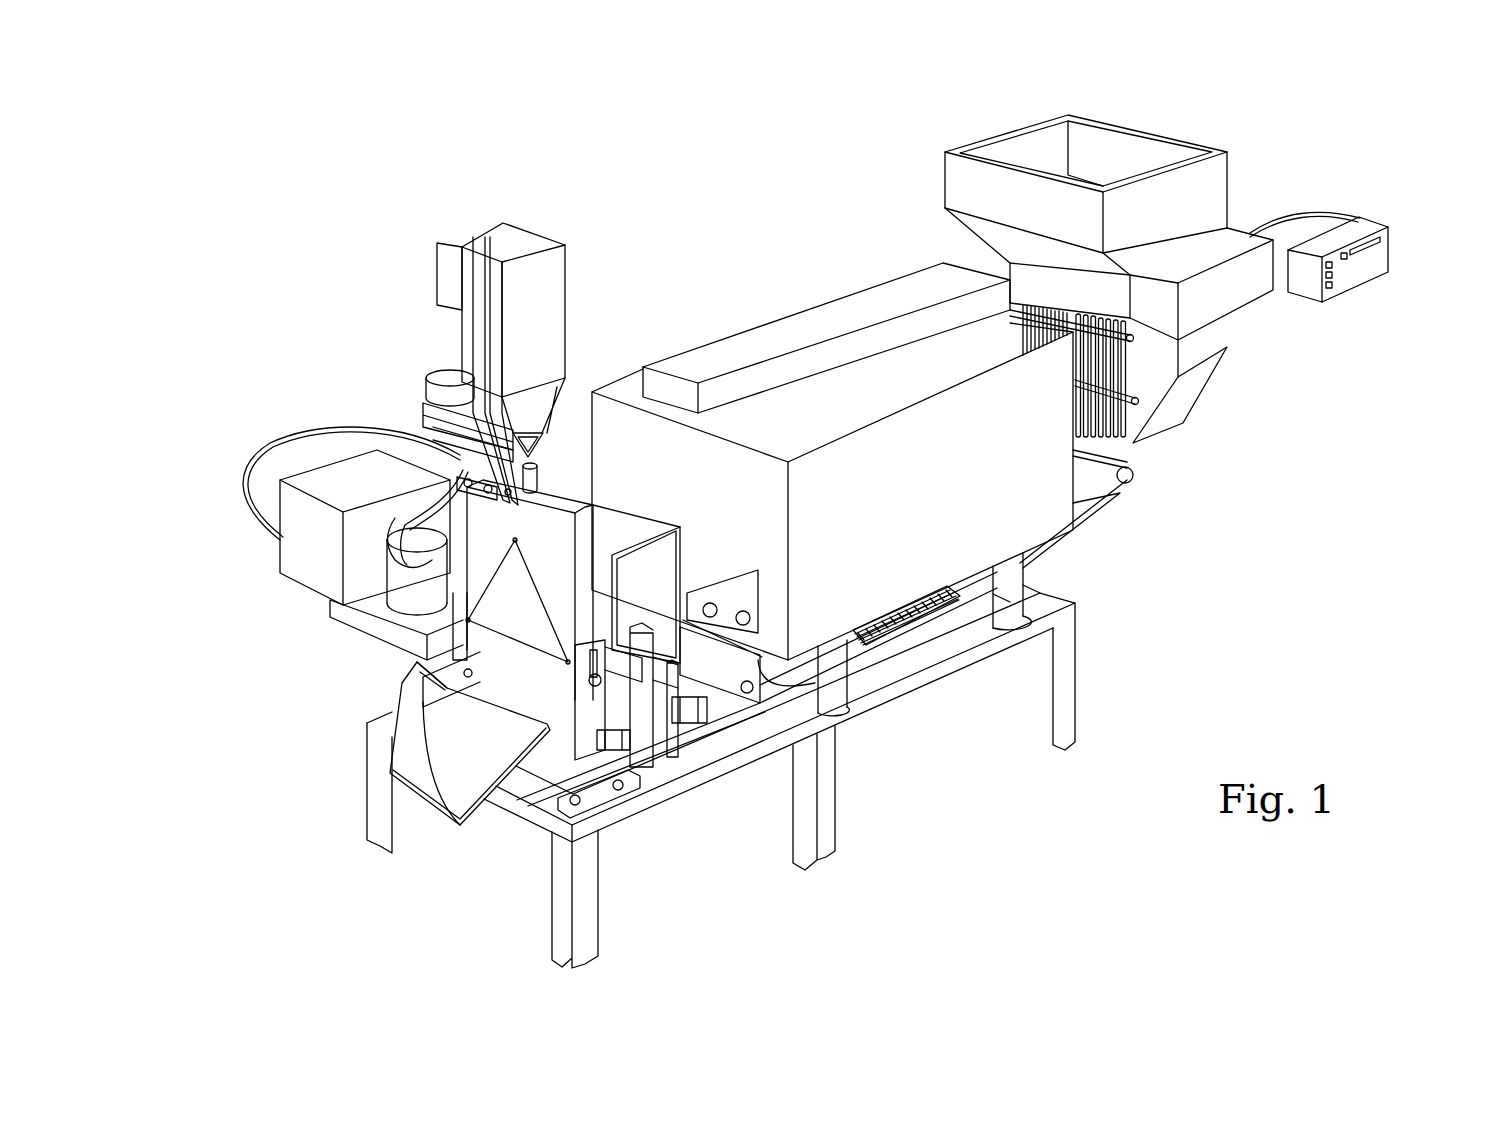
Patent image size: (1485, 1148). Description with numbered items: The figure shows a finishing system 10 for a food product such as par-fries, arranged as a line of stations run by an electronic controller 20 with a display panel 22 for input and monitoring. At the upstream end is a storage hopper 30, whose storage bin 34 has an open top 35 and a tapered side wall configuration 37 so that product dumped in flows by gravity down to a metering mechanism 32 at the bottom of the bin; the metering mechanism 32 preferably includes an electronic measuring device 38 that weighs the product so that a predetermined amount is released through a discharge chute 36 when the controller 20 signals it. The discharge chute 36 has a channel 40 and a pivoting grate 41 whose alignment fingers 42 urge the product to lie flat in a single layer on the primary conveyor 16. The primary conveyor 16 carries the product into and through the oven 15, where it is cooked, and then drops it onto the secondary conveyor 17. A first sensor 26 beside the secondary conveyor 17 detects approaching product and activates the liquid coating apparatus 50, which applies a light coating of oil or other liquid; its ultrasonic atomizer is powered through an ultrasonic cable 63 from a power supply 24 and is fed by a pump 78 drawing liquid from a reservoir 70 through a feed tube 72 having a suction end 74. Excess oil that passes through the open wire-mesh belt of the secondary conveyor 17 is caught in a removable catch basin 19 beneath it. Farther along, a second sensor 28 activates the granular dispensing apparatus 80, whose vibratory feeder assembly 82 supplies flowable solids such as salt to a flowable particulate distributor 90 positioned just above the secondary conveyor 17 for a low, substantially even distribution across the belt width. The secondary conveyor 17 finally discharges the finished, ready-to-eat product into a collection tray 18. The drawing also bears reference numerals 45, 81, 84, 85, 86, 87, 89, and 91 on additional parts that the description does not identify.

The finishing system 10 is at (783, 302).
The oven 15 is at (830, 292).
The primary conveyor 16 is at (1103, 508).
The secondary conveyor 17 is at (470, 801).
The collection tray 18 is at (483, 817).
The catch basin 19 is at (733, 702).
The electronic controller 20 is at (1366, 210).
The display panel 22 is at (1360, 272).
The power supply 24 is at (275, 565).
The first sensor 26 is at (703, 717).
The second sensor 28 is at (632, 783).
The storage hopper 30 is at (1074, 208).
The metering mechanism 32 is at (1258, 333).
The storage bin 34 is at (940, 173).
The open top 35 is at (1112, 158).
The discharge chute 36 is at (1185, 435).
The tapered side wall configuration 37 is at (960, 236).
The electronic measuring device 38 is at (1252, 280).
The channel 40 is at (1144, 428).
The grate 41 is at (1137, 438).
The alignment fingers 42 is at (1125, 442).
The guide rods 45 is at (478, 270).
The liquid coating apparatus 50 is at (553, 448).
The ultrasonic cable 63 is at (323, 425).
The reservoir 70 is at (483, 583).
The feed tube 72 is at (443, 515).
The suction end 74 is at (405, 600).
The pump 78 is at (398, 522).
The granular dispensing apparatus 80 is at (483, 314).
The mounting plate 81 is at (420, 410).
The vibratory feeder assembly 82 is at (529, 314).
The drive housing 84 is at (540, 260).
The housing cover 85 is at (515, 238).
The cylinder 86 is at (446, 362).
The arm 87 is at (532, 425).
The plate 89 is at (470, 437).
The flowable particulate distributor 90 is at (453, 620).
The direction of motion 91 is at (533, 693).